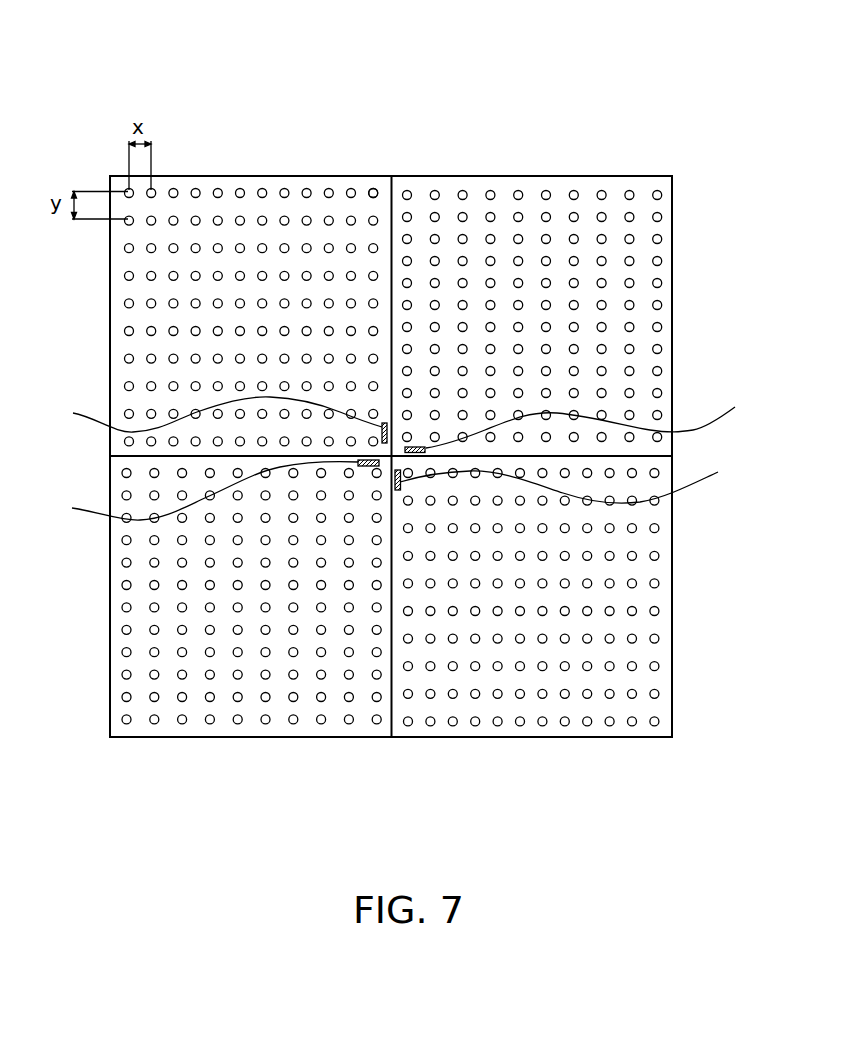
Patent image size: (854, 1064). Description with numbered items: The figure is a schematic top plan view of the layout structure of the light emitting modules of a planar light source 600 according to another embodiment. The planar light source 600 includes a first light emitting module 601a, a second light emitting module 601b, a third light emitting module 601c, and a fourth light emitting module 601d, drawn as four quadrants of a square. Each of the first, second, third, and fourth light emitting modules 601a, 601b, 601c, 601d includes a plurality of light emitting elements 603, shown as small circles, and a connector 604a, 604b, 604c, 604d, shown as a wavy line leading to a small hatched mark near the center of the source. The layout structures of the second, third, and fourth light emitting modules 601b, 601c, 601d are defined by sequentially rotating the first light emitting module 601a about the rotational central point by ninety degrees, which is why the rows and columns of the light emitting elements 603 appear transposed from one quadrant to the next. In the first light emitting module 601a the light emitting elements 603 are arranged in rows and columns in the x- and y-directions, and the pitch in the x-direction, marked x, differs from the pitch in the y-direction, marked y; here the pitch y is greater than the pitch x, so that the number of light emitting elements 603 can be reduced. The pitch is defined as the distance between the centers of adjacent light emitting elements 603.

The planar light source 600 is at (471, 120).
The first light emitting module 601a is at (298, 183).
The second light emitting module 601b is at (643, 187).
The third light emitting module 601c is at (500, 733).
The fourth light emitting module 601d is at (303, 733).
The light emitting element 603 is at (374, 189).
The connector 604a is at (209, 412).
The connector 604b is at (602, 414).
The connector 604c is at (586, 481).
The connector 604d is at (197, 491).